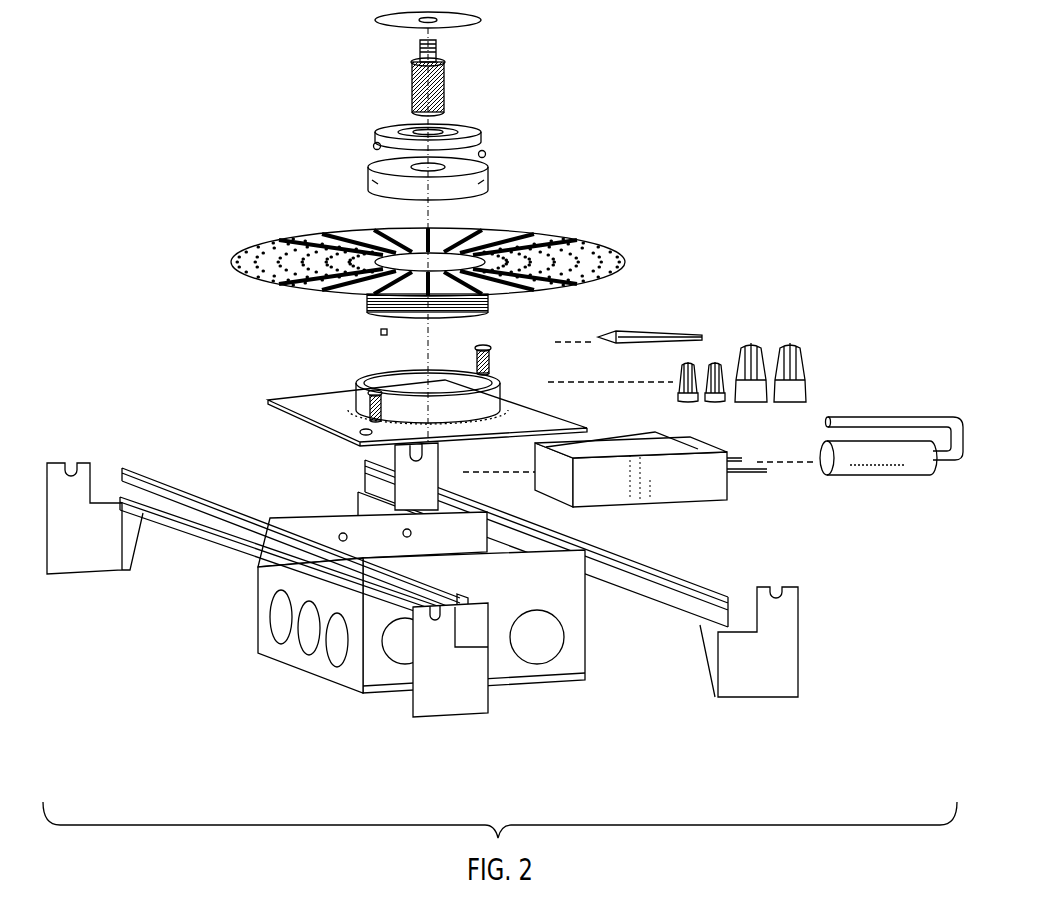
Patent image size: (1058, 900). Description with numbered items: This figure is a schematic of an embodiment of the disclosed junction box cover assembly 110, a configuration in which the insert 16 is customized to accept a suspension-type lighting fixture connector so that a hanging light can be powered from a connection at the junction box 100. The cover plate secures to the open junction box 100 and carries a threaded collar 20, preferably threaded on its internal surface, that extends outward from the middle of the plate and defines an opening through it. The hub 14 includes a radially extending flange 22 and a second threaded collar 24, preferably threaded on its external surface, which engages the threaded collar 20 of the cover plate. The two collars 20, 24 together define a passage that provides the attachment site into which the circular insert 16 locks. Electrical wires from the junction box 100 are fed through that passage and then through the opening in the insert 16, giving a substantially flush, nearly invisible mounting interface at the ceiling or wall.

The assembly 110 is at (241, 78).
The insert 16 is at (362, 177).
The hub 14 is at (518, 255).
The flange 22 is at (233, 262).
The second threaded collar 24 is at (368, 312).
The threaded collar 20 is at (497, 390).
The junction box 100 is at (625, 727).